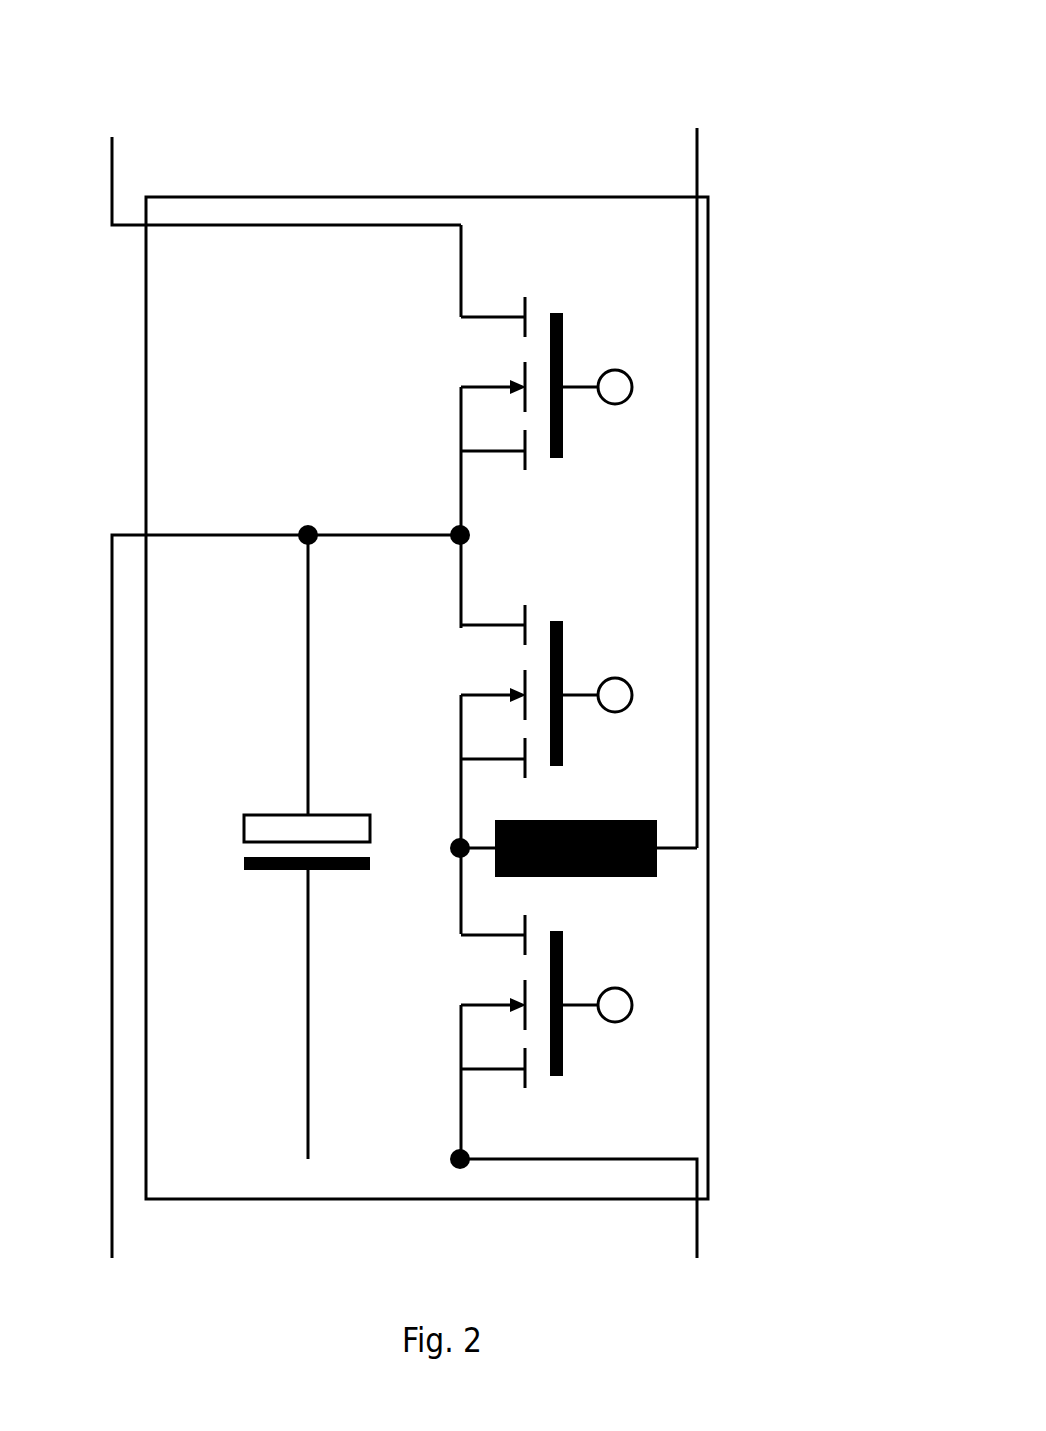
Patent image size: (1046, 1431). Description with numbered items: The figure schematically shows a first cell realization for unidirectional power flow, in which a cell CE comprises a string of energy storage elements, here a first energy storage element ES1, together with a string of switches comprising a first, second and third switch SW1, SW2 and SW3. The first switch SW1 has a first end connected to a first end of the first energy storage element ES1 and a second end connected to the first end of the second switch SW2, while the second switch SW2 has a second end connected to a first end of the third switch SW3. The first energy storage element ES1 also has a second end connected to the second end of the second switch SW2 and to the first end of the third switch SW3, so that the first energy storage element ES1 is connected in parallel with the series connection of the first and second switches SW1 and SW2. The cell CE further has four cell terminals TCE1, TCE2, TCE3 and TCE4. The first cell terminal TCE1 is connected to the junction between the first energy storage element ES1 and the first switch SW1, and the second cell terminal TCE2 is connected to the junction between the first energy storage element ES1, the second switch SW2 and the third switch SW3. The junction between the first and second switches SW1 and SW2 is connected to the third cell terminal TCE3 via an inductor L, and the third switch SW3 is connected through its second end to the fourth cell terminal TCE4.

The cell CE is at (781, 56).
The first cell terminal TCE1 is at (597, 1232).
The second cell terminal TCE2 is at (190, 919).
The third cell terminal TCE3 is at (677, 469).
The fourth cell terminal TCE4 is at (266, 153).
The first switch SW1 is at (502, 1001).
The second switch SW2 is at (502, 691).
The third switch SW3 is at (502, 383).
The first energy storage element ES1 is at (274, 842).
The inductor L is at (573, 869).